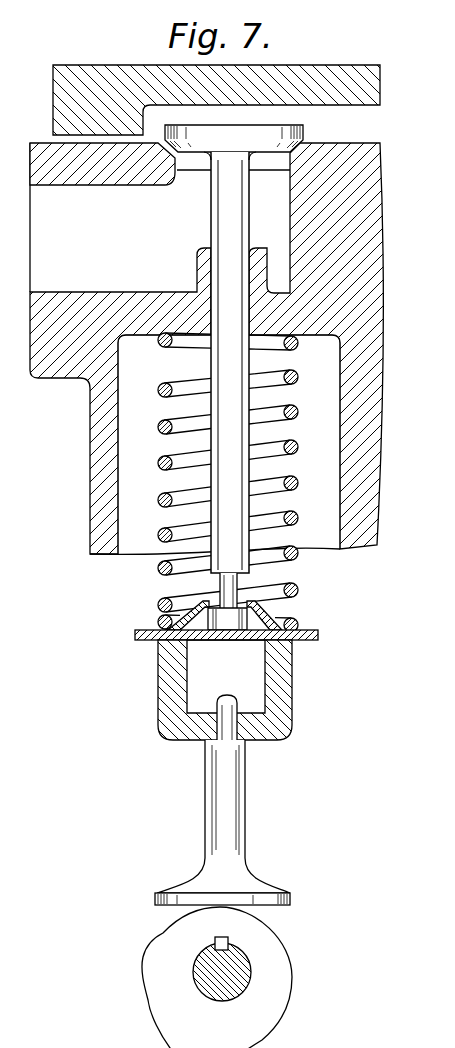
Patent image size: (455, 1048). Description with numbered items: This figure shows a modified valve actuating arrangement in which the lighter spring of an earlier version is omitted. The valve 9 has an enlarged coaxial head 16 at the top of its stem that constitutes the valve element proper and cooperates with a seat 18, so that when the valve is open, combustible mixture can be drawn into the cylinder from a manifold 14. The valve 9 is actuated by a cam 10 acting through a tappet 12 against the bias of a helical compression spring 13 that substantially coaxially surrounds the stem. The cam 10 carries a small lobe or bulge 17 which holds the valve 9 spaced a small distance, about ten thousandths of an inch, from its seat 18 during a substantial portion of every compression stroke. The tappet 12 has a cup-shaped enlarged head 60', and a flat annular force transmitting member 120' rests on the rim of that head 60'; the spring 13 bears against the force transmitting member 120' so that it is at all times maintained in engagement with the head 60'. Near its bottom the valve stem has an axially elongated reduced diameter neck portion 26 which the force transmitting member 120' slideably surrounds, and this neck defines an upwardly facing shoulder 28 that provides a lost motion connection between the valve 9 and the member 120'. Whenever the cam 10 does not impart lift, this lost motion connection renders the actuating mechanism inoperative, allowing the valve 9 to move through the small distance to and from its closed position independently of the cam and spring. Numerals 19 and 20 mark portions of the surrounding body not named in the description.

The valve 9 is at (230, 208).
The cam 10 is at (175, 1012).
The tappet 12 is at (225, 792).
The spring 13 is at (300, 553).
The manifold 14 is at (52, 186).
The head 16 is at (230, 134).
The lobe 17 is at (168, 930).
The seat 18 is at (303, 147).
The spring chamber 19 is at (150, 335).
The cylinder block 20 is at (191, 348).
The reduced diameter neck portion 26 is at (215, 577).
The shoulder 28 is at (213, 602).
The enlarged head 60' is at (259, 690).
The annular force transmitting member 120' is at (265, 625).